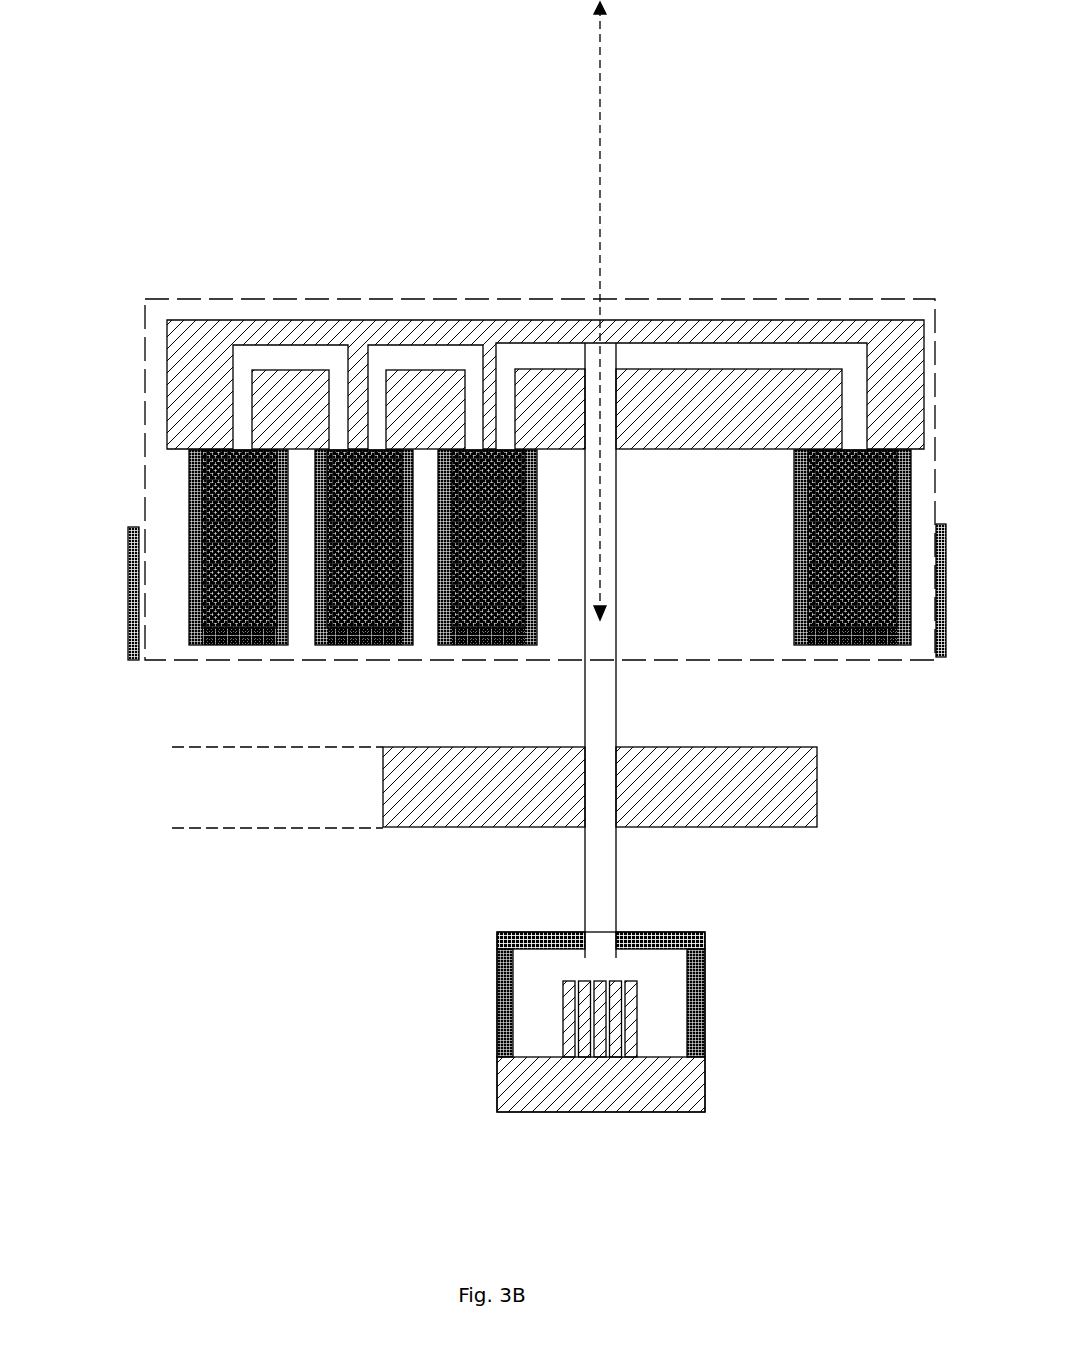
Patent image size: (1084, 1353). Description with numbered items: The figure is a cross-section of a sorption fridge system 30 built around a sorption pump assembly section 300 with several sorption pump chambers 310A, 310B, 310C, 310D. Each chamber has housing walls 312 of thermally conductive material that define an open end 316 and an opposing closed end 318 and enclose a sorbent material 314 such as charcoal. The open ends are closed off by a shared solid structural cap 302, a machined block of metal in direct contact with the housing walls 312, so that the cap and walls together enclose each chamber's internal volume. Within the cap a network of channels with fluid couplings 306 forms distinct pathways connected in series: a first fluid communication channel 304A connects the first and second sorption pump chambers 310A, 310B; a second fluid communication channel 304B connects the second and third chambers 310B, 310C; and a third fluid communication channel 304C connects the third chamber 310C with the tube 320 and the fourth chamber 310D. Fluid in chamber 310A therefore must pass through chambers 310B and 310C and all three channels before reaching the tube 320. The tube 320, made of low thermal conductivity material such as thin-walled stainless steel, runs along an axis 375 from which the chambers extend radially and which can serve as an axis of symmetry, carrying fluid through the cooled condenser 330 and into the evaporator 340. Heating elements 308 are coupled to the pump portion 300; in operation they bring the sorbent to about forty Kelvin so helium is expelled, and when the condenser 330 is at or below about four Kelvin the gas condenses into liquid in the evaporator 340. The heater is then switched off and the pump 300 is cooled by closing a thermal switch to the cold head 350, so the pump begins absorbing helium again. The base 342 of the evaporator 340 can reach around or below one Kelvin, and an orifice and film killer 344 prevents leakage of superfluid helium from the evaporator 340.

The sorption fridge system 30 is at (290, 195).
The axis 375 is at (583, 150).
The sorption pump assembly section 300 is at (470, 292).
The shared solid structural cap 302 is at (752, 323).
The first fluid communication channel 304A is at (232, 380).
The second fluid communication channel 304B is at (432, 342).
The third fluid communication channel 304C is at (637, 342).
The fluid coupling 306 is at (232, 418).
The open end 316 is at (261, 438).
The tube 320 is at (618, 693).
The first sorption pump chamber 310A is at (176, 492).
The second sorption pump chamber 310B is at (374, 650).
The third sorption pump chamber 310C is at (468, 650).
The fourth sorption pump chamber 310D is at (768, 565).
The housing wall 312 is at (188, 530).
The sorbent material 314 is at (189, 596).
The closed end 318 is at (337, 645).
The heating element 308 is at (952, 652).
The cold head 350 is at (220, 785).
The condenser 330 is at (825, 779).
The evaporator 340 is at (603, 991).
The orifice and film killer 344 is at (599, 946).
The base 342 is at (520, 1078).